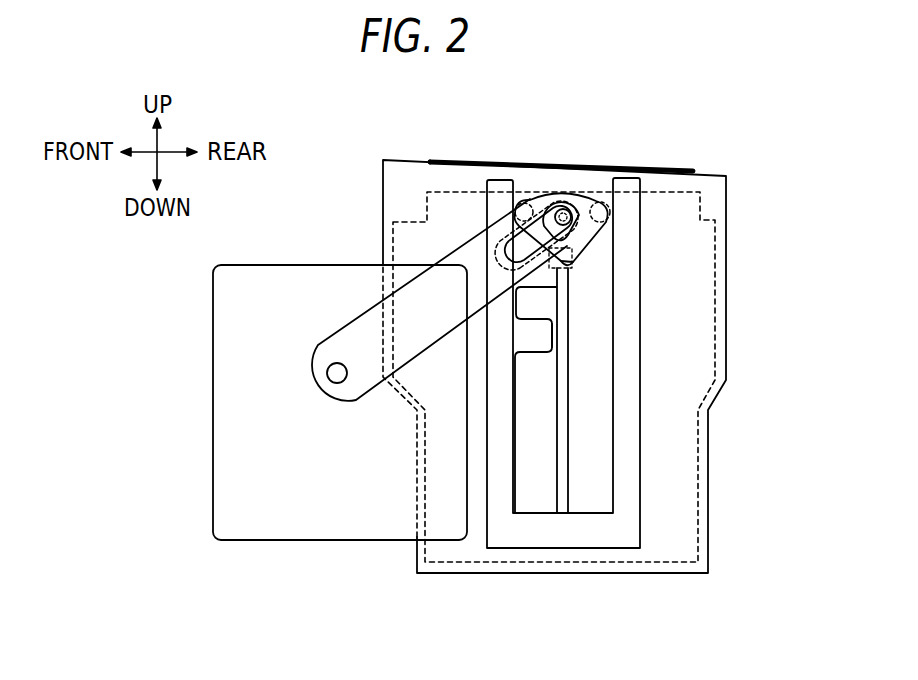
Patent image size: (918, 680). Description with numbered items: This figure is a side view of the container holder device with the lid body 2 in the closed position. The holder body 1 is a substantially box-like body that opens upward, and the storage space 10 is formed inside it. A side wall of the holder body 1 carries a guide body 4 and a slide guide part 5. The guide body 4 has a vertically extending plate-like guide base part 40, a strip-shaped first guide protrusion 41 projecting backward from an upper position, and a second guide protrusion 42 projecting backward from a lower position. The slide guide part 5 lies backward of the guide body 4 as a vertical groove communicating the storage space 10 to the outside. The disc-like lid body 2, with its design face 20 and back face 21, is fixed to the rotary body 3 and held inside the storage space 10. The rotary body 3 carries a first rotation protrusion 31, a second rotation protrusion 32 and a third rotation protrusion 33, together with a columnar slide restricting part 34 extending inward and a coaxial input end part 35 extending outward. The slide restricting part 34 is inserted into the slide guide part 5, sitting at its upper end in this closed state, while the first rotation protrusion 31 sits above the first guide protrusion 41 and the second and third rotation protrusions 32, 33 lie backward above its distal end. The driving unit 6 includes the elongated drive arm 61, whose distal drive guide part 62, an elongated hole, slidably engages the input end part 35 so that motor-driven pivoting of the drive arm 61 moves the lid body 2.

The holder body 1 is at (727, 275).
The lid body 2 is at (680, 170).
The rotary body 3 is at (582, 232).
The guide body 4 is at (495, 487).
The slide guide part 5 is at (565, 388).
The driving unit 6 is at (337, 316).
The storage space 10 is at (690, 552).
The design face 20 is at (477, 165).
The back face 21 is at (460, 203).
The first rotation protrusion 31 is at (538, 200).
The second rotation protrusion 32 is at (567, 250).
The third rotation protrusion 33 is at (613, 210).
The slide restricting part 34 is at (580, 200).
The input end part 35 is at (557, 200).
The guide base part 40 is at (510, 425).
The first guide protrusion 41 is at (545, 285).
The second guide protrusion 42 is at (540, 333).
The drive arm 61 is at (436, 346).
The drive guide part 62 is at (507, 243).